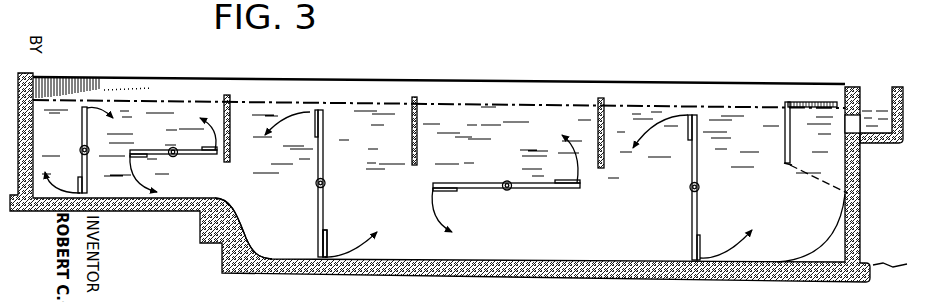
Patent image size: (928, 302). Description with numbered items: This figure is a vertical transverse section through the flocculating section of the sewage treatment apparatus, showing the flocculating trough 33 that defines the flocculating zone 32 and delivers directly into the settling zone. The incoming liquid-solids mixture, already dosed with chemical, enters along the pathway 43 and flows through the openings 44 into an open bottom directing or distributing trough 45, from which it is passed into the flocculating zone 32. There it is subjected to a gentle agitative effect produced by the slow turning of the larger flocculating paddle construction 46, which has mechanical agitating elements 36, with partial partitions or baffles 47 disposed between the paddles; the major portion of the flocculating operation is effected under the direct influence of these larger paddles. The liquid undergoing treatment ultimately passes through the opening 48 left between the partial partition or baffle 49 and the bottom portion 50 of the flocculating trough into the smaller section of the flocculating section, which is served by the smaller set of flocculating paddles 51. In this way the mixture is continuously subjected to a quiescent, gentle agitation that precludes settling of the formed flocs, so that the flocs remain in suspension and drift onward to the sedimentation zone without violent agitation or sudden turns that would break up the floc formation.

The flocculating zone 32 is at (683, 186).
The flocculating trough 33 is at (353, 96).
The mechanical agitating element 36 is at (327, 236).
The pathway 43 is at (872, 102).
The openings 44 is at (855, 128).
The directing trough 45 is at (815, 147).
The flocculating paddle construction 46 is at (323, 171).
The partial partition or baffle 47 is at (417, 112).
The opening 48 is at (220, 188).
The partial partition or baffle 49 is at (230, 110).
The bottom portion 50 is at (241, 232).
The flocculating paddles 51 is at (87, 145).